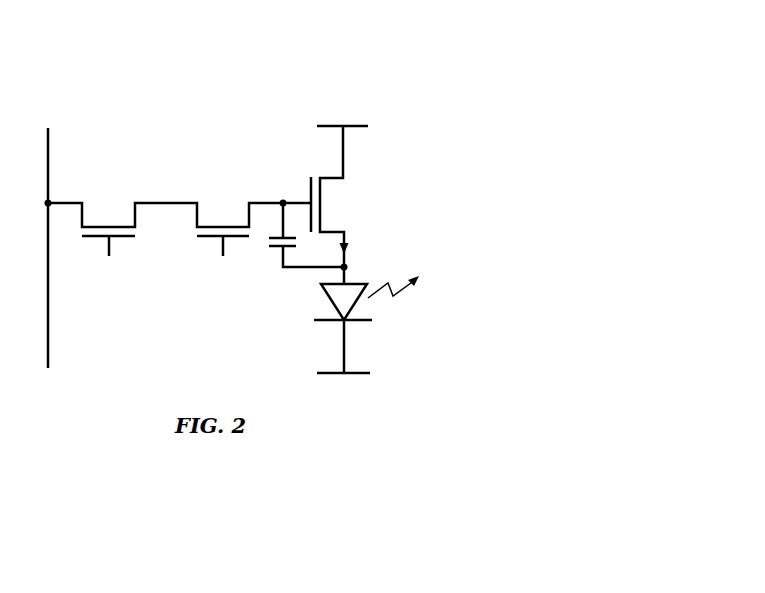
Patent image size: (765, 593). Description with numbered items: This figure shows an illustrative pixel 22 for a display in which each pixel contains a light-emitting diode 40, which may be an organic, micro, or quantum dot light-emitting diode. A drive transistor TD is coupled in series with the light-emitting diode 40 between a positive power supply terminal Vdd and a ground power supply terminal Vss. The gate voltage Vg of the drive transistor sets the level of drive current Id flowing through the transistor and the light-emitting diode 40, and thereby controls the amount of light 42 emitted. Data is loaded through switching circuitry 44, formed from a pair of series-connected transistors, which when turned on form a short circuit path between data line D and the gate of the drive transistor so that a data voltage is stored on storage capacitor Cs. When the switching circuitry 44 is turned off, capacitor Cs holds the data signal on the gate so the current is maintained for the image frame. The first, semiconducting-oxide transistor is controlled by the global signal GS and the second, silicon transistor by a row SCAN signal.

The pixel 22 is at (230, 209).
The switching circuitry 44 is at (73, 147).
The light-emitting diode 40 is at (322, 291).
The light 42 is at (398, 300).